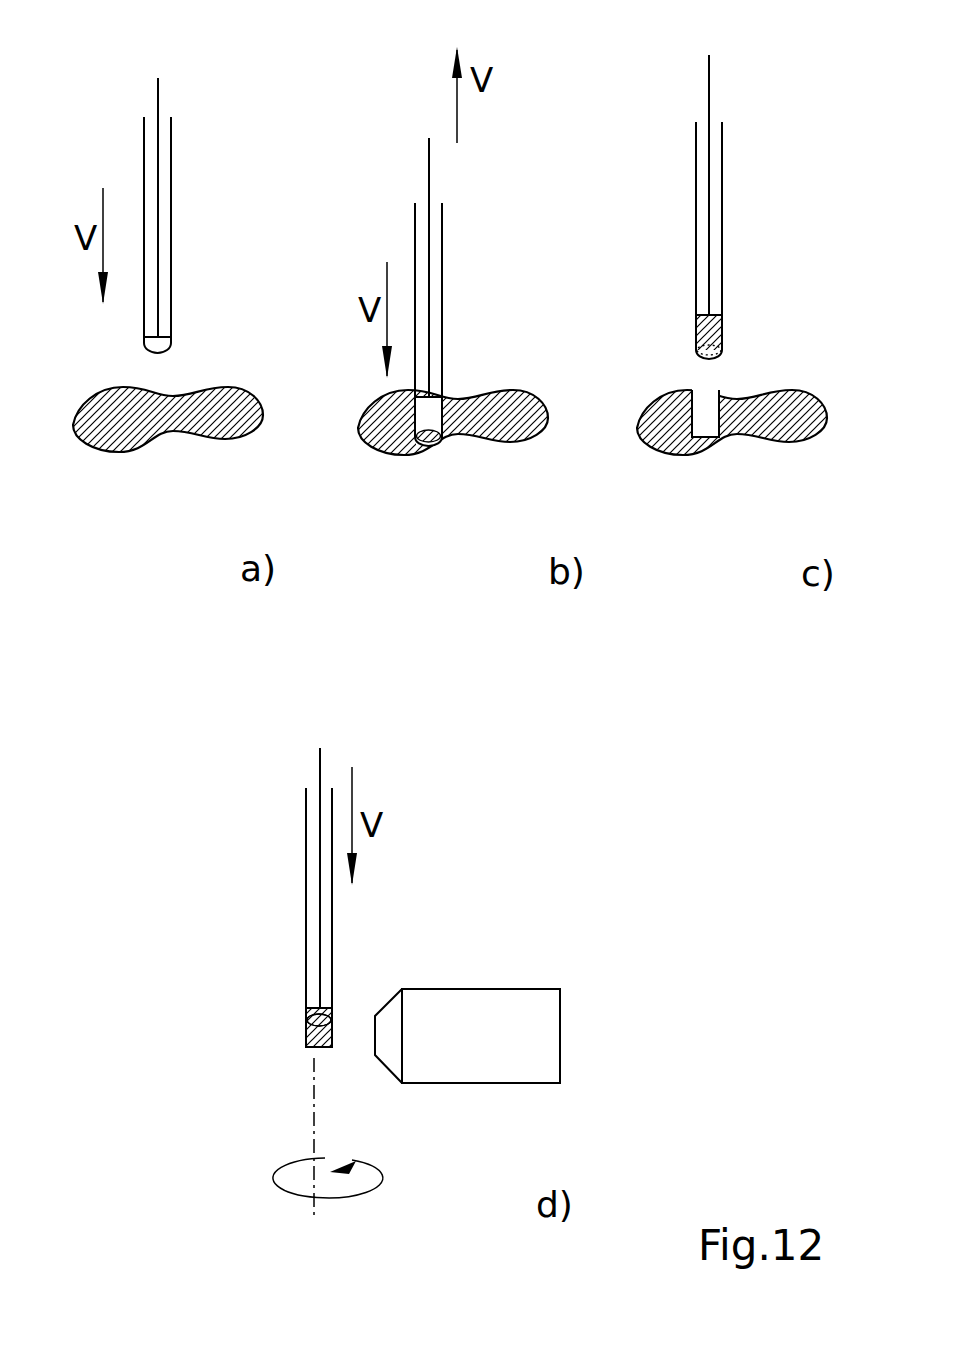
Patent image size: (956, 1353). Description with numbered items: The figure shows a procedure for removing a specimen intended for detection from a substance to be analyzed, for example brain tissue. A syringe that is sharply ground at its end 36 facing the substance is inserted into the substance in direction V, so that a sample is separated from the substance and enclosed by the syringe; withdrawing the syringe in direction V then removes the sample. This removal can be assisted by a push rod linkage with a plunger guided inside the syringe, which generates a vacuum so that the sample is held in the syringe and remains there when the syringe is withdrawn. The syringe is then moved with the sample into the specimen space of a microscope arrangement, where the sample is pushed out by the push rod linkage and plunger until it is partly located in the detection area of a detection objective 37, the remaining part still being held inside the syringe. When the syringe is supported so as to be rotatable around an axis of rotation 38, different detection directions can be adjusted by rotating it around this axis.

The end 36 is at (166, 352).
The detection objective 37 is at (460, 1003).
The axis of rotation 38 is at (312, 1137).